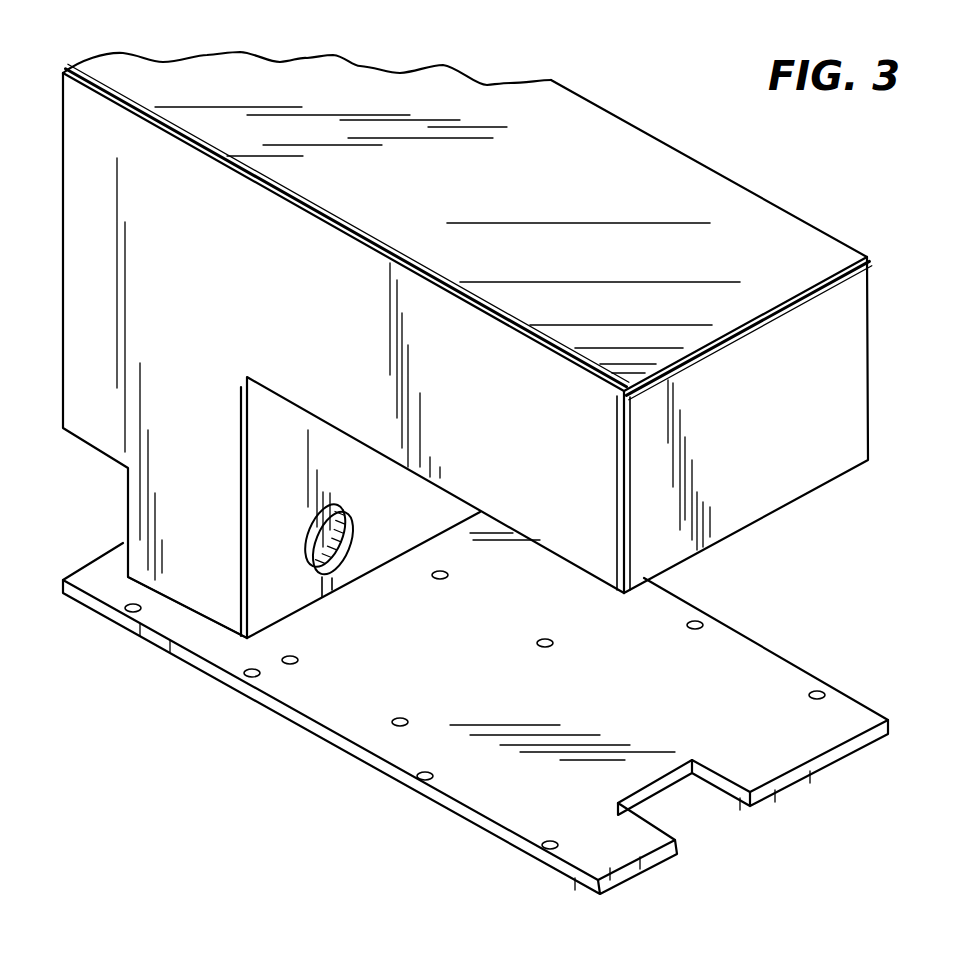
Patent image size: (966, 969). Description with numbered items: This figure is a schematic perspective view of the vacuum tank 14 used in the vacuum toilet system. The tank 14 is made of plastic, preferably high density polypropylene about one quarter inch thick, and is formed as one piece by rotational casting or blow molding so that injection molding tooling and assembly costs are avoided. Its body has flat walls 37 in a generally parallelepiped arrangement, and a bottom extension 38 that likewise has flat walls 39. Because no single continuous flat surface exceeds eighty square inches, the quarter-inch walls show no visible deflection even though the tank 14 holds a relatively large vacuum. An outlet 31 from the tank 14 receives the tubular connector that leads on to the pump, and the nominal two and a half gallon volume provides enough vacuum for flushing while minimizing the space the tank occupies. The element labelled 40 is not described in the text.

The vacuum tank 14 is at (660, 181).
The outlet 31 is at (348, 552).
The flat walls 37 is at (688, 518).
The bottom extension 38 is at (414, 509).
The flat walls 39 is at (262, 610).
The base plate 40 is at (853, 718).